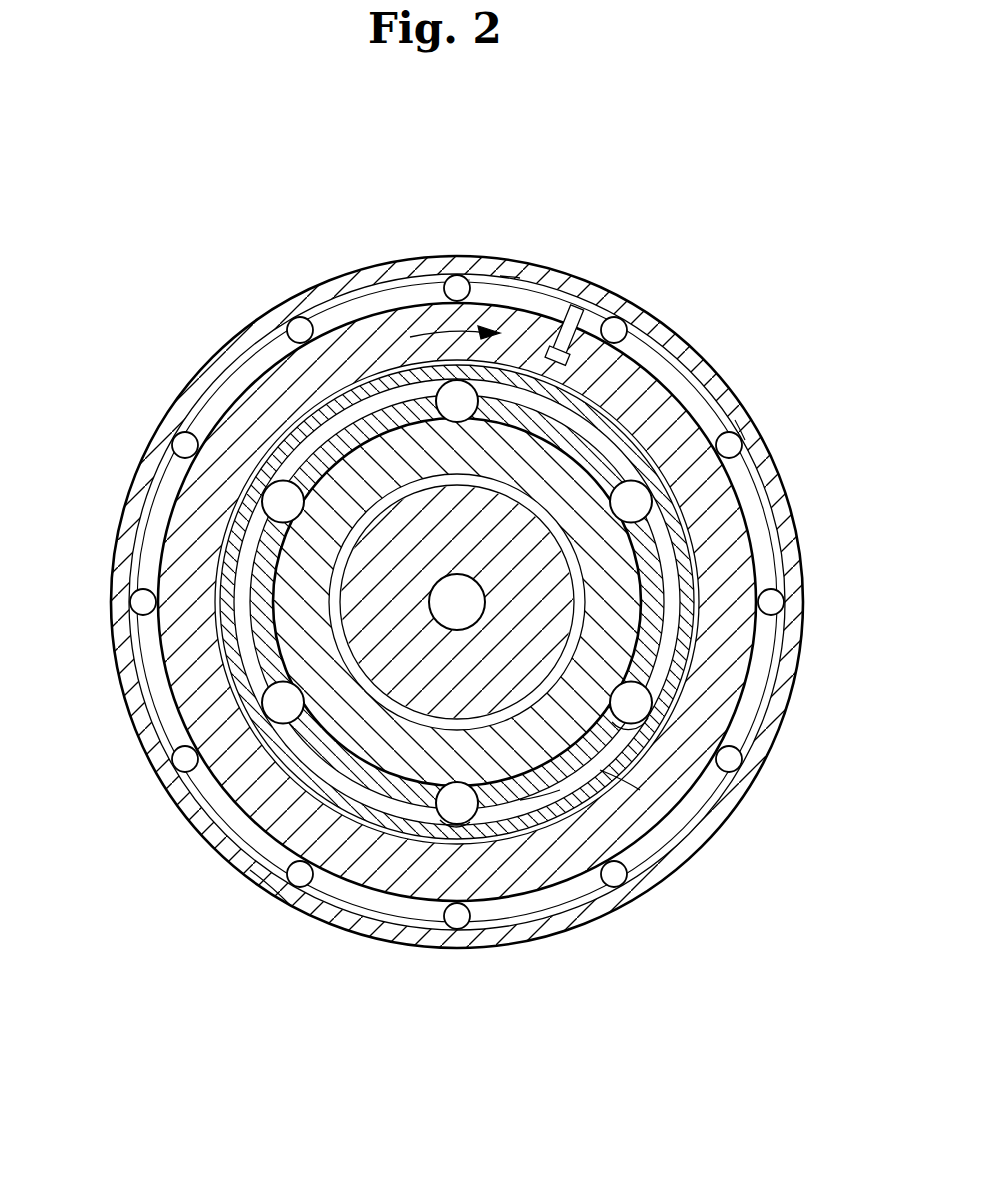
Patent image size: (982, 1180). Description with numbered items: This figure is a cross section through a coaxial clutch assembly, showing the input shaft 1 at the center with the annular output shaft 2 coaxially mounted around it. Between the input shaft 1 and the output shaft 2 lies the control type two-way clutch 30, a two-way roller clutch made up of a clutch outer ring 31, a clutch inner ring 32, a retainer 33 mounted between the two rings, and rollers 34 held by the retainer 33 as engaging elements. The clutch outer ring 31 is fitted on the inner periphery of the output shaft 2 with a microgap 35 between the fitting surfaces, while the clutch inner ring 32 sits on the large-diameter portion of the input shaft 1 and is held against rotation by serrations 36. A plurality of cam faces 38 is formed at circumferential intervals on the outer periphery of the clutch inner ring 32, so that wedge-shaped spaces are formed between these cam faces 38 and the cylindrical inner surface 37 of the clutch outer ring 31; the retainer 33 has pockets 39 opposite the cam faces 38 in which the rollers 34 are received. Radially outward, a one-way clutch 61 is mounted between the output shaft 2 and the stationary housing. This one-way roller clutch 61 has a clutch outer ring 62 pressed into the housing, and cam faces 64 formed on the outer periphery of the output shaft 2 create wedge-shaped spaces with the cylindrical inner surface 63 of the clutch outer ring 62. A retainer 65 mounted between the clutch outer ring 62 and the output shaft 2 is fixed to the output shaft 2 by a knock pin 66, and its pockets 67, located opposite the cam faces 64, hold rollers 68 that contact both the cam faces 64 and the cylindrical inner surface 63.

The input shaft 1 is at (390, 522).
The output shaft 2 is at (370, 340).
The control type two-way clutch 30 is at (243, 692).
The clutch outer ring 31 is at (200, 720).
The clutch inner ring 32 is at (248, 812).
The retainer 33 is at (277, 863).
The rollers 34 is at (645, 497).
The microgap 35 is at (505, 715).
The serrations 36 is at (545, 782).
The cylindrical inner surface 37 is at (660, 800).
The cam faces 38 is at (655, 528).
The pockets 39 is at (645, 706).
The one-way clutch 61 is at (402, 249).
The clutch outer ring 62 is at (455, 268).
The cylindrical inner surface 63 is at (510, 285).
The cam faces 64 is at (538, 292).
The retainer 65 is at (700, 372).
The knock pin 66 is at (585, 298).
The pockets 67 is at (742, 438).
The rollers 68 is at (742, 444).